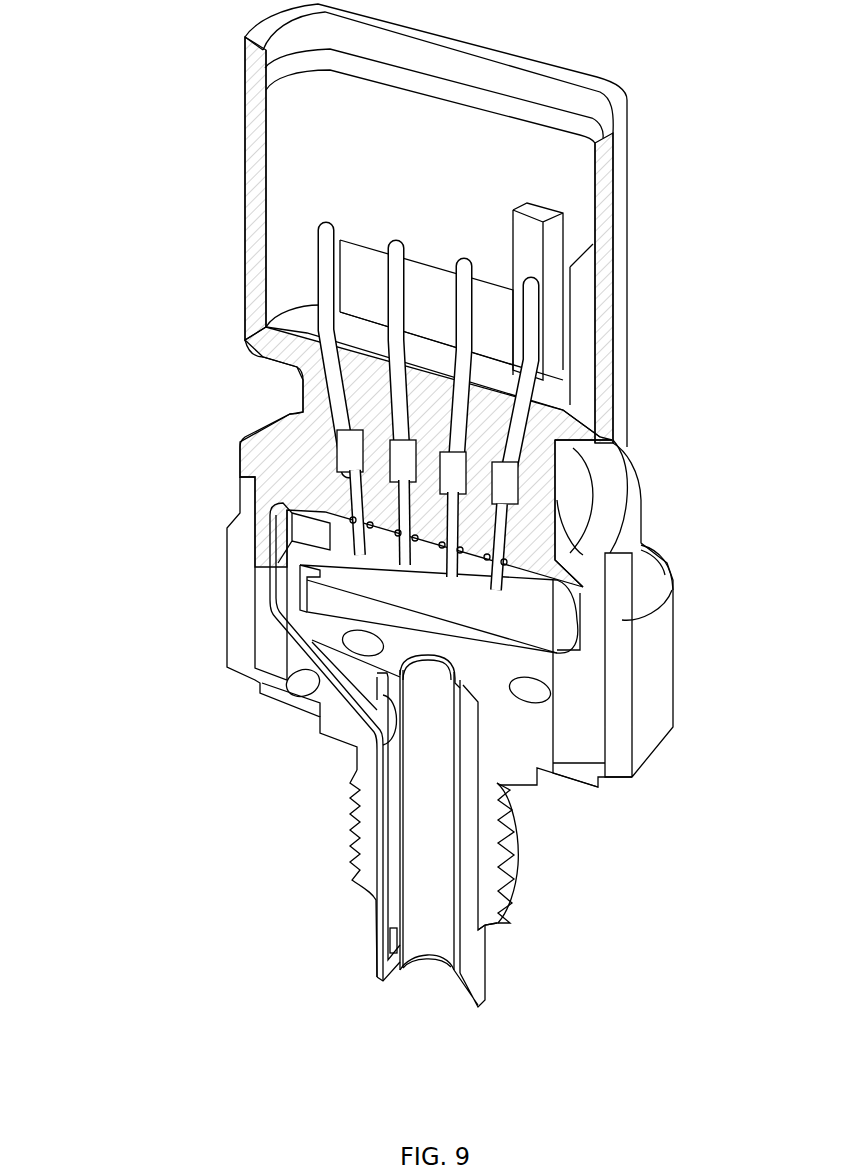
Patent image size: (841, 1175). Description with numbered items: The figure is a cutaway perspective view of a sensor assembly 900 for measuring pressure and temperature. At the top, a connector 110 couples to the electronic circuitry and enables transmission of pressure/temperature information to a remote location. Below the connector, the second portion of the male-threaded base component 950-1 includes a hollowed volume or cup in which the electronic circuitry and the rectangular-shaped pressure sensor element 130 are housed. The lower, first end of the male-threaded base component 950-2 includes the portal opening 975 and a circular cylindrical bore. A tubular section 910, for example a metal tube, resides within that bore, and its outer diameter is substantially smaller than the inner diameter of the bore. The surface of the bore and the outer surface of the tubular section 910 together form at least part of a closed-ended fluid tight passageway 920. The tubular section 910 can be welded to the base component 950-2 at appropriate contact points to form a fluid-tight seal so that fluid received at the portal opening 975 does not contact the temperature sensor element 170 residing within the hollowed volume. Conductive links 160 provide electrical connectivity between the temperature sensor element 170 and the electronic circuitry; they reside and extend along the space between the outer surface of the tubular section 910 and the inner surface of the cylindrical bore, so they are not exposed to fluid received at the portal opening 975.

The sensor assembly 900 is at (135, 108).
The connector 110 is at (606, 298).
The second portion of the male-threaded base component 950-1 is at (657, 617).
The pressure sensor element 130 is at (548, 668).
The conductive links 160 is at (378, 758).
The tubular section 910 is at (425, 850).
The temperature sensor element 170 is at (390, 943).
The fluid tight passageway 920 is at (500, 868).
The male-threaded base component 950-2 is at (493, 919).
The portal opening 975 is at (428, 978).